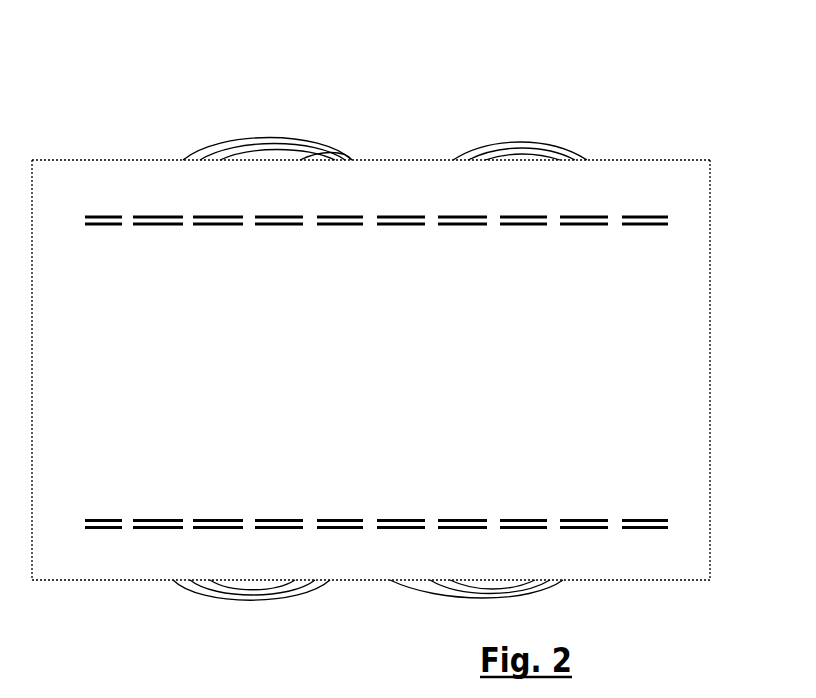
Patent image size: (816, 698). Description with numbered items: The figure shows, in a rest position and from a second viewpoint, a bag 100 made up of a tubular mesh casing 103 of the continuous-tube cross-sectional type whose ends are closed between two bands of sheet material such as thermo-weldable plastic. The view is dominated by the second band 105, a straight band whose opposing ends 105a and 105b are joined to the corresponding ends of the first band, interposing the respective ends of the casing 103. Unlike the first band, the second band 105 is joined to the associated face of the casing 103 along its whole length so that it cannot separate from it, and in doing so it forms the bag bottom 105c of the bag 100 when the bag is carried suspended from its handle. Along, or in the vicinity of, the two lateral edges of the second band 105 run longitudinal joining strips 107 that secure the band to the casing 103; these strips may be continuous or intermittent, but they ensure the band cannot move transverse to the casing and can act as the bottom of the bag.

The bag 100 is at (418, 110).
The tubular mesh casing 103 is at (222, 597).
The second band 105 is at (372, 582).
The end of second band 105a is at (50, 575).
The end of second band 105b is at (692, 583).
The bag bottom 105c is at (418, 373).
The longitudinal joining strips 107 is at (610, 523).